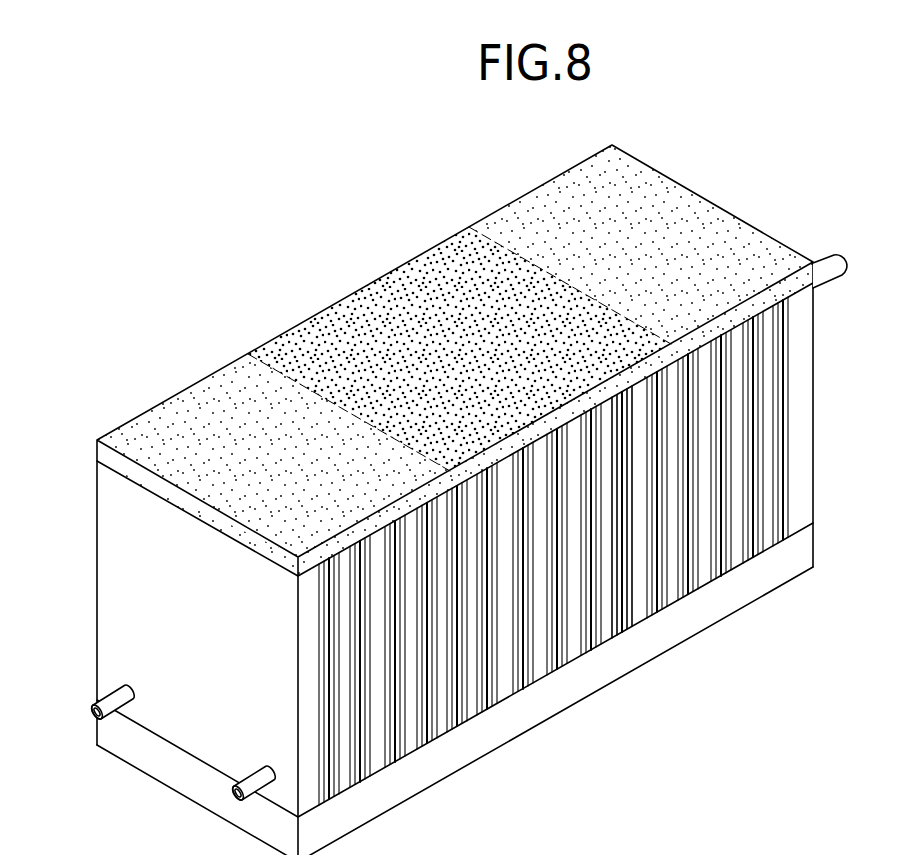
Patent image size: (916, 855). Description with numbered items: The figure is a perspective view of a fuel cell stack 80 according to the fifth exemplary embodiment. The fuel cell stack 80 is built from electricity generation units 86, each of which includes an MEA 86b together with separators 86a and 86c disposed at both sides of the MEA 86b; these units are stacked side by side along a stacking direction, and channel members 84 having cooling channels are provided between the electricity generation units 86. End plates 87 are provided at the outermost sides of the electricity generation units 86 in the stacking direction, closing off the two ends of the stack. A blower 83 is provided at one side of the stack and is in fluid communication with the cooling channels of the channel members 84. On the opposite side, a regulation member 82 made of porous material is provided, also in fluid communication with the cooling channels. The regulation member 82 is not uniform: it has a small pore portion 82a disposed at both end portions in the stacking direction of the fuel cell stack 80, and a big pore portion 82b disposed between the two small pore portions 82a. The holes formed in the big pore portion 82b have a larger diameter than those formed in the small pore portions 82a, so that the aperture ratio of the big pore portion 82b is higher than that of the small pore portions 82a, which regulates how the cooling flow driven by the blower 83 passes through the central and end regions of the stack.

The fuel cell stack 80 is at (307, 179).
The regulation member 82 is at (703, 183).
The small pore portion 82a is at (192, 410).
The big pore portion 82b is at (363, 313).
The blower 83 is at (430, 767).
The channel member 84 is at (573, 640).
The electricity generation unit 86 is at (746, 701).
The separator 86a is at (613, 620).
The MEA 86b is at (620, 637).
The separator 86c is at (628, 613).
The end plate 87 is at (813, 468).